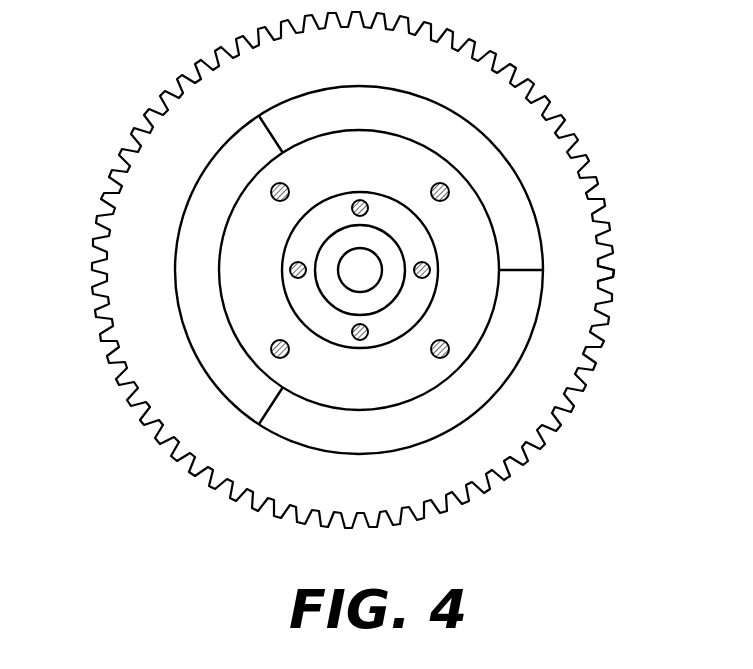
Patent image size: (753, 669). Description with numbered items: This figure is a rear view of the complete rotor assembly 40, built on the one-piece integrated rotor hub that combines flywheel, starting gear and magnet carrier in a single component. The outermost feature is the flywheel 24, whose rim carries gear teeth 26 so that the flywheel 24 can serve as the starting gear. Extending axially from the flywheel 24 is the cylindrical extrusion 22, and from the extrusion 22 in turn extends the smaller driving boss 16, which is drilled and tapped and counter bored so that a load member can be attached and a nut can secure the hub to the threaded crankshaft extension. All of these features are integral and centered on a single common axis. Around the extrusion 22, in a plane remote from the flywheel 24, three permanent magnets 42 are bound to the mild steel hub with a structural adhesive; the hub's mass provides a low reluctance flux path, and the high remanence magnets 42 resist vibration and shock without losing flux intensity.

The rotor assembly 40 is at (66, 102).
The flywheel 24 is at (259, 62).
The gear teeth 26 is at (612, 220).
The permanent magnets 42 is at (471, 157).
The extrusion 22 is at (458, 320).
The driving boss 16 is at (377, 214).